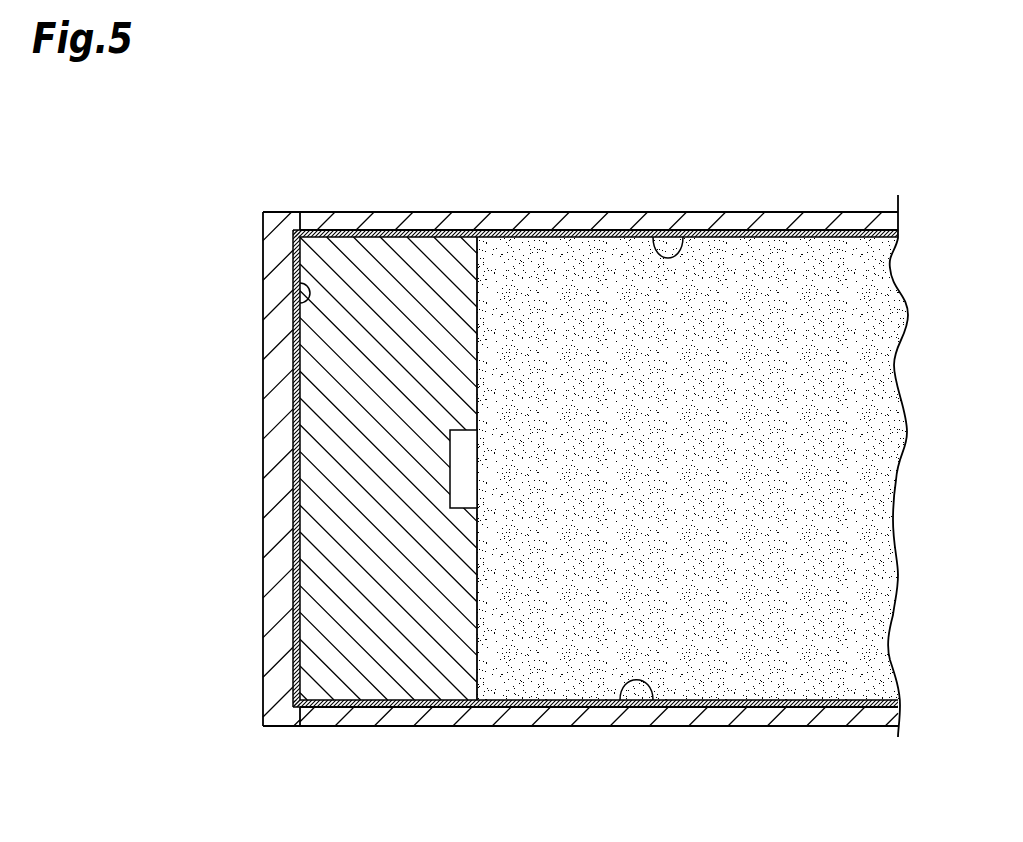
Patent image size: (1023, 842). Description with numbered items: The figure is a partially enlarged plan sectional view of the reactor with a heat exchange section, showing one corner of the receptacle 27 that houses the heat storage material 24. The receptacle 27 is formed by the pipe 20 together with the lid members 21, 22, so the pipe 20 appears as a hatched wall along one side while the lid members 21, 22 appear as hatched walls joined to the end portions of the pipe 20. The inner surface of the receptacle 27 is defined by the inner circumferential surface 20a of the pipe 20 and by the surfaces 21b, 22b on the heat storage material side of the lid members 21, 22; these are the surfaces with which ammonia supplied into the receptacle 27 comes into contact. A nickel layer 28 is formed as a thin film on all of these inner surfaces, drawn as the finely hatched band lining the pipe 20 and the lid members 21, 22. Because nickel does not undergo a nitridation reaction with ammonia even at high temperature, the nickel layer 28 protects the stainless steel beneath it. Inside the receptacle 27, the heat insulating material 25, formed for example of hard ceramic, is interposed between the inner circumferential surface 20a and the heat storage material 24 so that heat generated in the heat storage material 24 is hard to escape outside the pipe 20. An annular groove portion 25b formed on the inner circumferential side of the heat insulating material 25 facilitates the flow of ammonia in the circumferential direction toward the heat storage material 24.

The pipe 20 is at (275, 447).
The inner circumferential surface 20a is at (293, 282).
The lid member 21 is at (520, 715).
The inner surface of lid member 21b is at (652, 705).
The lid member 22 is at (457, 222).
The inner surface of lid member 22b is at (681, 250).
The heat storage material 24 is at (875, 473).
The heat insulating material 25 is at (352, 250).
The groove portion 25b is at (457, 485).
The receptacle 27 is at (203, 498).
The nickel layer 28 is at (551, 236).